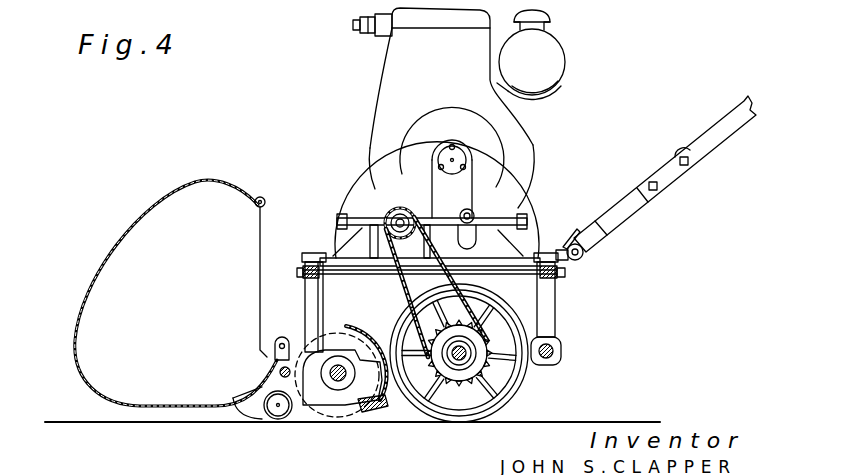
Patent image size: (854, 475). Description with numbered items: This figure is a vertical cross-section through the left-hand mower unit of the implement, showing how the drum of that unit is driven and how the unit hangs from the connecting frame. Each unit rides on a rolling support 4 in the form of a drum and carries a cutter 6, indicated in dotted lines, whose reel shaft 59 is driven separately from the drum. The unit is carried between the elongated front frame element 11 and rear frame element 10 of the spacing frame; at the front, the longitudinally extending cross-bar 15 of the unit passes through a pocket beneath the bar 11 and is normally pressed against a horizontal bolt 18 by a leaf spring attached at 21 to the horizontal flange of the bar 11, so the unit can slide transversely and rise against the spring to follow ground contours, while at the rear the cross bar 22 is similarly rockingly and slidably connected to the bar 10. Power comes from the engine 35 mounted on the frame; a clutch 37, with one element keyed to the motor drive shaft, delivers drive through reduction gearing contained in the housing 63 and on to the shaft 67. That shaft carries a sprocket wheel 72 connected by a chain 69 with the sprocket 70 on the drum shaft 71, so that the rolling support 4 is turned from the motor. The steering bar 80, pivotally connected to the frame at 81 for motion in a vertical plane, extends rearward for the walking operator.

The rolling support 4 is at (508, 397).
The cutter 6 is at (325, 415).
The rear frame element 10 is at (556, 277).
The front frame element 11 is at (302, 258).
The cross-bar 15 is at (312, 310).
The bolt 18 is at (299, 280).
The spring attachment 21 is at (566, 275).
The rear cross bar 22 is at (556, 305).
The engine 35 is at (522, 135).
The clutch 37 is at (420, 125).
The cutter reel shaft 59 is at (338, 382).
The housing 63 is at (510, 192).
The shaft 67 is at (401, 222).
The chain 69 is at (393, 292).
The sprocket 70 is at (452, 372).
The drum shaft 71 is at (460, 360).
The sprocket wheel 72 is at (393, 215).
The steering bar 80 is at (724, 117).
The pivotal connection 81 is at (585, 258).